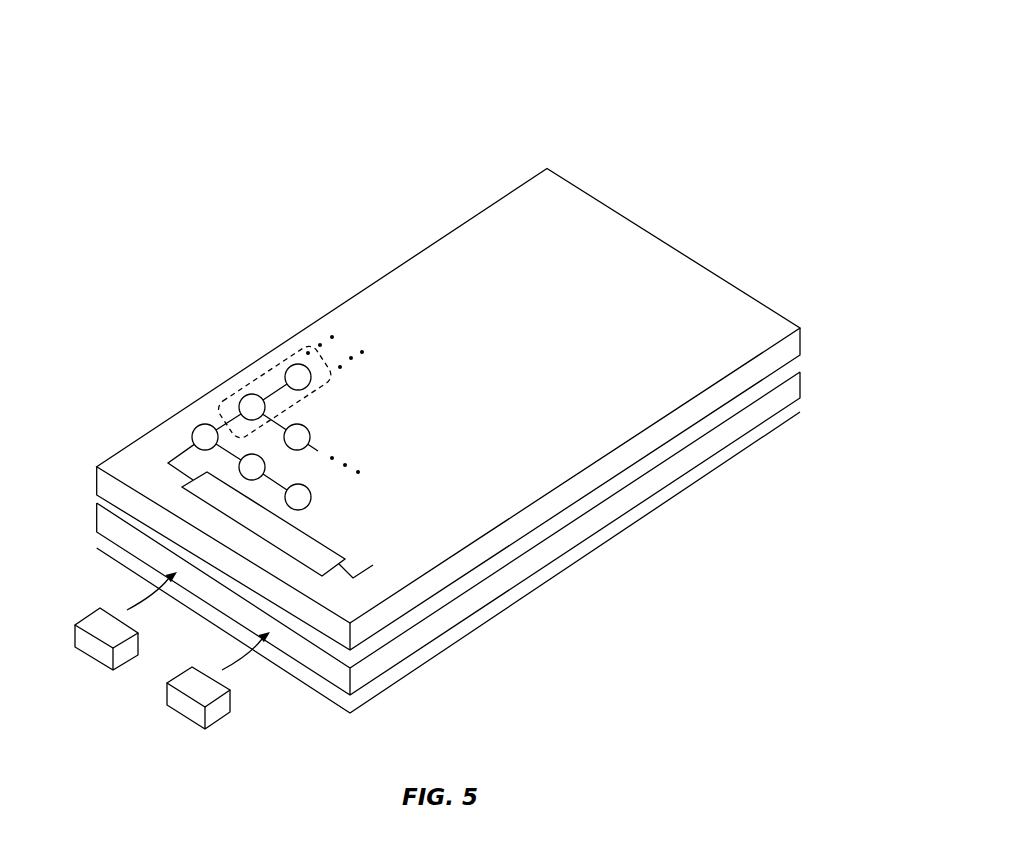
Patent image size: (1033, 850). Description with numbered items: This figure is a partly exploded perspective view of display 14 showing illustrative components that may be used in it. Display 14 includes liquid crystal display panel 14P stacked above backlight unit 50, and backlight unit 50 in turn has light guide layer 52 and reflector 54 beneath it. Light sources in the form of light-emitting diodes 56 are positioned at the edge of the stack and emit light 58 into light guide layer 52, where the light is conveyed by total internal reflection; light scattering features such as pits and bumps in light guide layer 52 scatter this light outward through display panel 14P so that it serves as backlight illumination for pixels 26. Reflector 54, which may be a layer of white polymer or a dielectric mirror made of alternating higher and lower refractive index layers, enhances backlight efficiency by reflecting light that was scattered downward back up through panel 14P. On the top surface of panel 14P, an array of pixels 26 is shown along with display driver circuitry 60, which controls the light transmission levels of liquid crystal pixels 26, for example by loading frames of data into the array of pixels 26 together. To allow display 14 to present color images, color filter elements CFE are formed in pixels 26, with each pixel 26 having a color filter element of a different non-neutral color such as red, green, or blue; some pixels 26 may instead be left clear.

The display 14 is at (639, 80).
The liquid crystal display panel 14P is at (736, 287).
The pixels 26 is at (237, 400).
The color filter elements CFE is at (250, 388).
The backlight unit 50 is at (818, 363).
The light guide layer 52 is at (628, 498).
The reflector 54 is at (723, 468).
The light-emitting diodes 56 is at (93, 645).
The light 58 is at (140, 598).
The display driver circuitry 60 is at (332, 548).